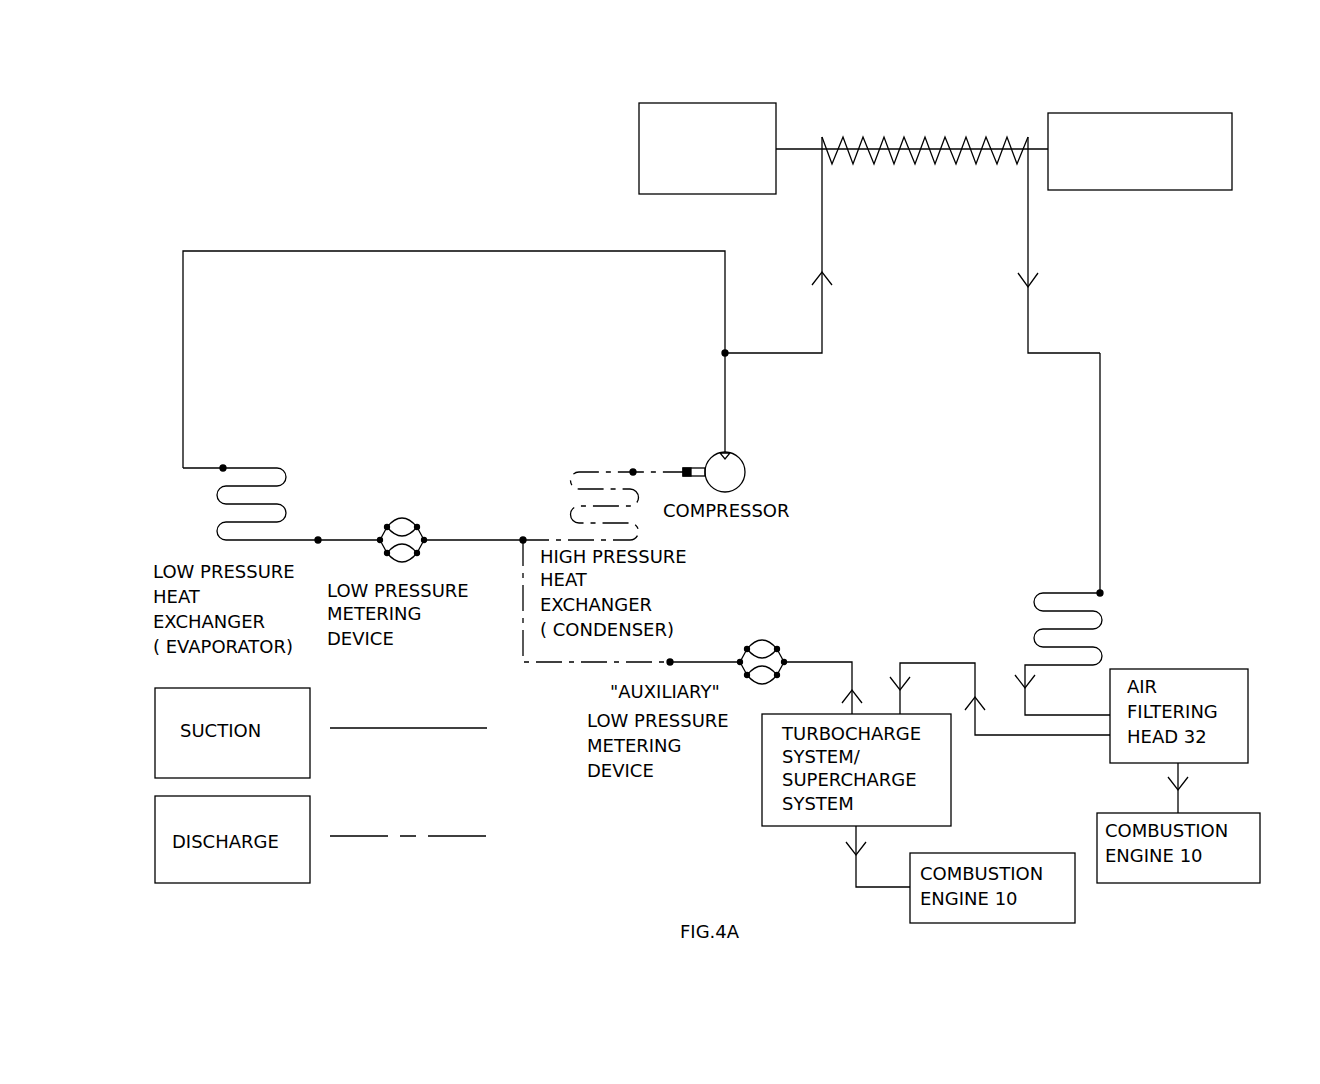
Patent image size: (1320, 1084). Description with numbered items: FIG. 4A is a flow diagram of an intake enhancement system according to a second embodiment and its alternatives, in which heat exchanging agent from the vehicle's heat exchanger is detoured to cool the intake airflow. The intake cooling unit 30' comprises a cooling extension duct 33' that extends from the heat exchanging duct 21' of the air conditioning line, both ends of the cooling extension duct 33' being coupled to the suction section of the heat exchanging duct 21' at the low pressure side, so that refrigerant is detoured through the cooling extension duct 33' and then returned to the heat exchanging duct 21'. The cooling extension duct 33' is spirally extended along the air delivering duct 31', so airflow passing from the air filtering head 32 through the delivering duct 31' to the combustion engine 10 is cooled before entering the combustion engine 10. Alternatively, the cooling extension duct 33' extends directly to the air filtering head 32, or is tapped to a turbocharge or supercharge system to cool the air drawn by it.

The delivering duct 31' is at (833, 102).
The intake cooling unit 30' is at (935, 106).
The cooling extension duct 33' is at (1016, 436).
The heat exchanging duct 21' is at (1148, 474).
The air filtering head 32 is at (707, 148).
The combustion engine 10 is at (1140, 151).